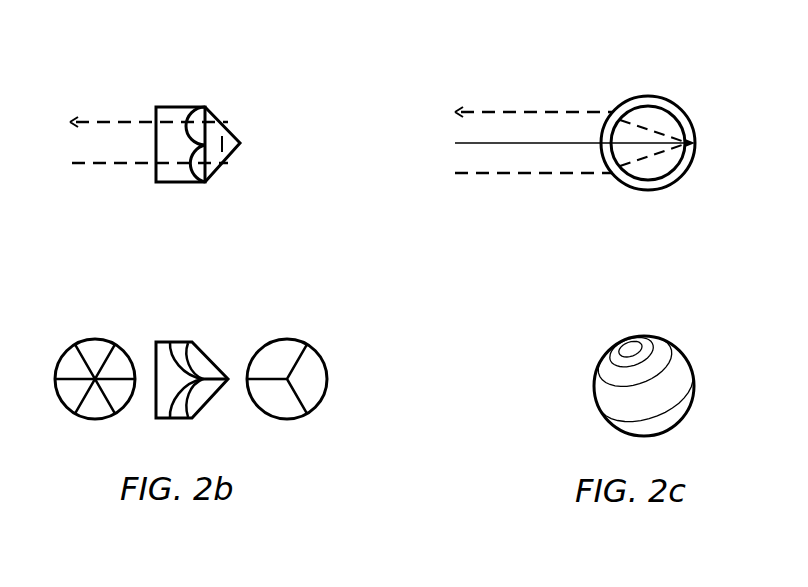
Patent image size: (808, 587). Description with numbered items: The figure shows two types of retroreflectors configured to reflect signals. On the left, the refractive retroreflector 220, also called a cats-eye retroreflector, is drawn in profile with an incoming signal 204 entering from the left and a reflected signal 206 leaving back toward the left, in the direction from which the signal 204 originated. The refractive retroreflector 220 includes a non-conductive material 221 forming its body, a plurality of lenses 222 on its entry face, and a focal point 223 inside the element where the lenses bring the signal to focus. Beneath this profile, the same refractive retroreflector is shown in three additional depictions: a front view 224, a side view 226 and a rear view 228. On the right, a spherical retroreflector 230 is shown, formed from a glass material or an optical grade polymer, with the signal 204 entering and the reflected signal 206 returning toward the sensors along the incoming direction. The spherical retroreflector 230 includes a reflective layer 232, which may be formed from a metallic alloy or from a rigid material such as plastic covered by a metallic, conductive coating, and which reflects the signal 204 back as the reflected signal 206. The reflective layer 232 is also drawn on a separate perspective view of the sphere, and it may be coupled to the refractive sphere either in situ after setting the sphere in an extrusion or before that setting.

In FIG. 2b, the signal 204 is at (73, 164).
In FIG. 2c, the signal 204 is at (480, 174).
In FIG. 2b, the reflected signal 206 is at (104, 121).
In FIG. 2c, the reflected signal 206 is at (508, 112).
In FIG. 2b, the refractive retroreflector 220 is at (217, 148).
In FIG. 2b, the non-conductive material 221 is at (178, 185).
In FIG. 2b, the plurality of lenses 222 is at (197, 105).
In FIG. 2b, the focal point 223 is at (227, 130).
In FIG. 2b, the front view 224 is at (93, 338).
In FIG. 2b, the side view 226 is at (178, 338).
In FIG. 2b, the rear view 228 is at (282, 338).
In FIG. 2c, the spherical retroreflector 230 is at (652, 191).
In FIG. 2c, the reflective layer 232 is at (681, 108).